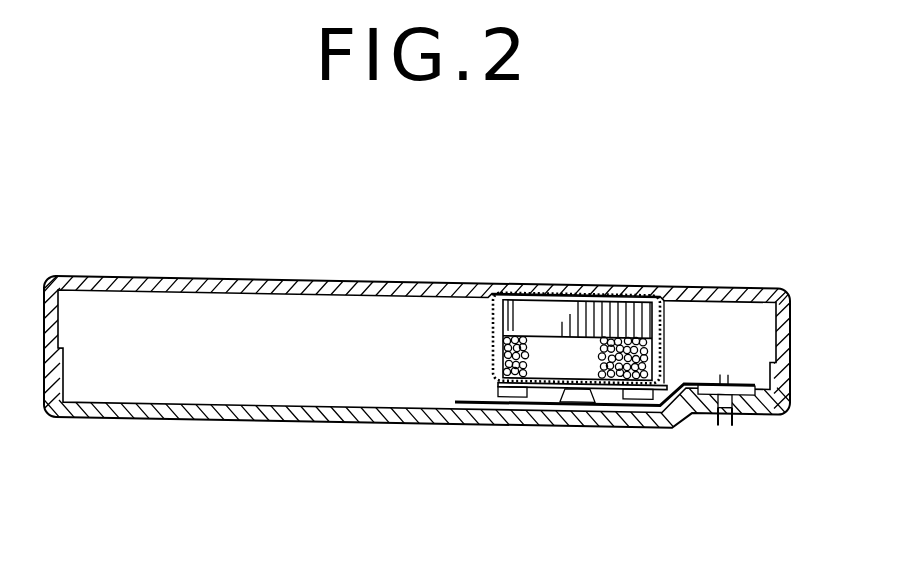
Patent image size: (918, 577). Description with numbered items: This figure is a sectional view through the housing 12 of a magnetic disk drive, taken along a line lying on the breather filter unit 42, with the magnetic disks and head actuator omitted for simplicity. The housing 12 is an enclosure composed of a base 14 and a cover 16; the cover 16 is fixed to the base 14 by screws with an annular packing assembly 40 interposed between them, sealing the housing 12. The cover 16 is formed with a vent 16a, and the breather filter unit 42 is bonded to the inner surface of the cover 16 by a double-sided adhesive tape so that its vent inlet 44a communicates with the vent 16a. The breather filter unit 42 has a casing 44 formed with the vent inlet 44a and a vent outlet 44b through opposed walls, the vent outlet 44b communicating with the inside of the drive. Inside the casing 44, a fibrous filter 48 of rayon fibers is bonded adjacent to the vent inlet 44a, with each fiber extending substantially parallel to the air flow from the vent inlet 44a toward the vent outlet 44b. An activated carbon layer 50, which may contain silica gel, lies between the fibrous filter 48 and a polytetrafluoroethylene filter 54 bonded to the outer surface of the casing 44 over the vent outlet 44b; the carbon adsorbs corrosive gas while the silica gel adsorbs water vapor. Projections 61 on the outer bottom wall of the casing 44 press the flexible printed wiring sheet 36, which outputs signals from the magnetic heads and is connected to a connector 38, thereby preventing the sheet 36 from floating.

The housing 12 is at (452, 362).
The base 14 is at (183, 416).
The cover 16 is at (275, 272).
The vent 16a is at (613, 276).
The flexible printed wiring sheet 36 is at (568, 411).
The connector 38 is at (748, 398).
The annular packing assembly 40 is at (788, 342).
The breather filter unit 42 is at (668, 300).
The casing 44 is at (570, 358).
The vent inlet 44a is at (533, 280).
The vent outlet 44b is at (552, 403).
The fibrous filter 48 is at (497, 313).
The activated carbon layer 50 is at (497, 351).
The filter 54 is at (593, 409).
The projections 61 is at (500, 403).